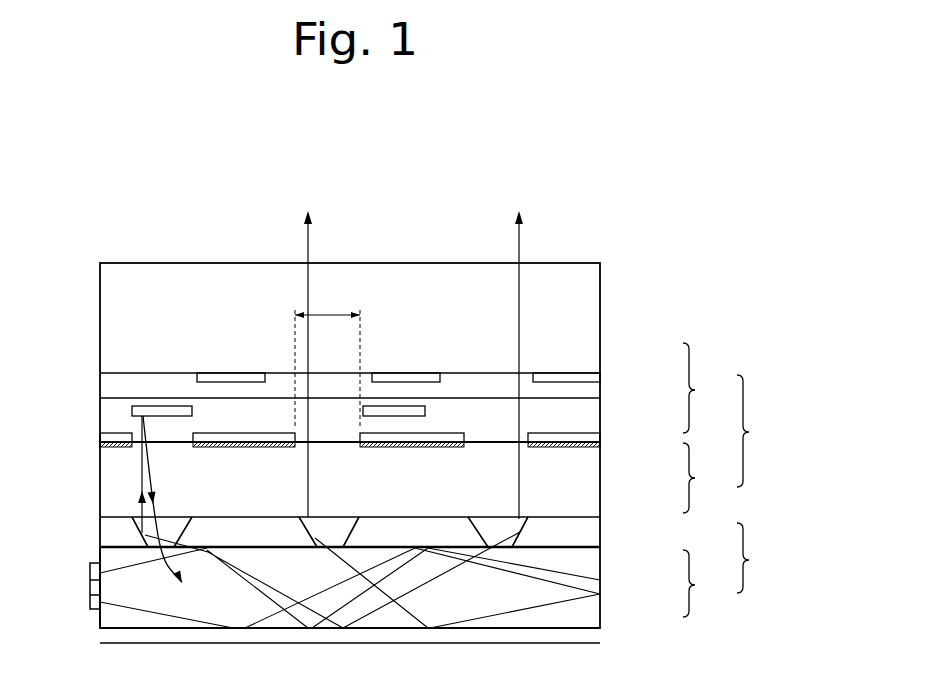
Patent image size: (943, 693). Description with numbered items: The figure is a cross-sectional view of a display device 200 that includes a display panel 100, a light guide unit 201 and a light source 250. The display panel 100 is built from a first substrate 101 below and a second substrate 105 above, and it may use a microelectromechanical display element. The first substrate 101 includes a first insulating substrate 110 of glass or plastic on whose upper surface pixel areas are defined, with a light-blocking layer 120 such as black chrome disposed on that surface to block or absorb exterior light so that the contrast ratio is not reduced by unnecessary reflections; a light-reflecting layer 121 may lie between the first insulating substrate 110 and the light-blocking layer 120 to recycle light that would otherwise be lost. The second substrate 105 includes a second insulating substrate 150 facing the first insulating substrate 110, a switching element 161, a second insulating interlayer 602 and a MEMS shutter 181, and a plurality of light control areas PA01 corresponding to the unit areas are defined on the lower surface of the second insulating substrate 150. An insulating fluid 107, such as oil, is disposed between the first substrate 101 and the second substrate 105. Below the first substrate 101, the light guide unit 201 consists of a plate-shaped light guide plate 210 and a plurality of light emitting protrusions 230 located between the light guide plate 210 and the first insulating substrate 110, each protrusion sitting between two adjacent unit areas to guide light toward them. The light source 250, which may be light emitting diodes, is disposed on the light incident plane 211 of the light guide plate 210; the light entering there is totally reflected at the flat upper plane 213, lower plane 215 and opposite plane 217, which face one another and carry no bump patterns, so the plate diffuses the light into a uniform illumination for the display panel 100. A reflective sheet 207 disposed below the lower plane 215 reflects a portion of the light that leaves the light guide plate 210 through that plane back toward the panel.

The display device 200 is at (708, 194).
The display panel 100 is at (763, 431).
The second substrate 105 is at (709, 388).
The first substrate 101 is at (709, 478).
The second insulating substrate 150 is at (590, 357).
The switching element 161 is at (589, 381).
The insulating fluid 107 is at (590, 412).
The MEMS shutter 181 is at (393, 410).
The light-blocking layer 120 is at (592, 435).
The light-reflecting layer 121 is at (597, 446).
The first insulating substrate 110 is at (592, 490).
The light emitting protrusion 230 is at (520, 532).
The light guide unit 201 is at (763, 558).
The light guide plate 210 is at (709, 583).
The upper plane 213 is at (572, 548).
The opposite plane 217 is at (600, 590).
The lower plane 215 is at (578, 628).
The light source 250 is at (97, 572).
The light incident plane 211 is at (100, 620).
The reflective sheet 207 is at (108, 640).
The second insulating interlayer 602 is at (113, 388).
The light control area PA01 is at (328, 358).